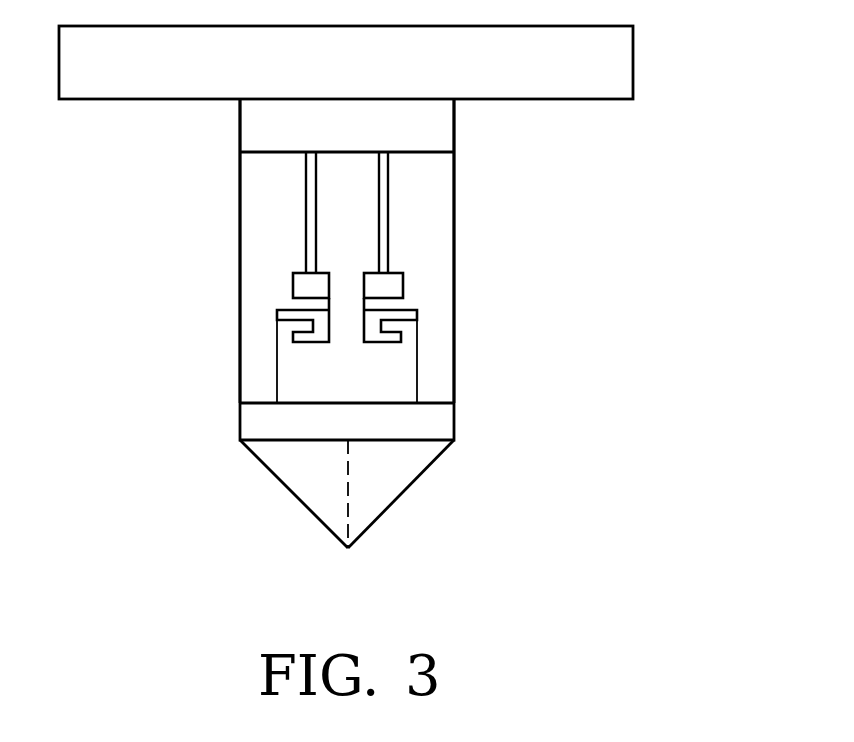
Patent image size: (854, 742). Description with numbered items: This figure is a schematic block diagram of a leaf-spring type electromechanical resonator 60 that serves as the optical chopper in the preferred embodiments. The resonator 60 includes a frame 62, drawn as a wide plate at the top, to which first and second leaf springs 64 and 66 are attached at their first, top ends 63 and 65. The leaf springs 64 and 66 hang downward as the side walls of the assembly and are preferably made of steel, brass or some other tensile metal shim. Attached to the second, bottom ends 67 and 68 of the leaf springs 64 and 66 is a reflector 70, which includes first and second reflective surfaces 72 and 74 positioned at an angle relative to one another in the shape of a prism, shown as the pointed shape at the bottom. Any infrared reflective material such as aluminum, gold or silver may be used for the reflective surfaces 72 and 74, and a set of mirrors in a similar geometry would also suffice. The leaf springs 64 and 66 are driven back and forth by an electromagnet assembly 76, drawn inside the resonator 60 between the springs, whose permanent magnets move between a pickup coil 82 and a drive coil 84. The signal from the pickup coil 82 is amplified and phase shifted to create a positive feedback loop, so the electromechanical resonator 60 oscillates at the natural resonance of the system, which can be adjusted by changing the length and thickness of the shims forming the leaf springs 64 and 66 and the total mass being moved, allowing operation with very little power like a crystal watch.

The electromechanical resonator 60 is at (643, 272).
The frame 62 is at (607, 62).
The first top end 63 is at (260, 163).
The first leaf spring 64 is at (258, 232).
The first top end 65 is at (427, 162).
The second leaf spring 66 is at (440, 238).
The second bottom end 67 is at (238, 382).
The second bottom end 68 is at (440, 392).
The reflector 70 is at (257, 425).
The first reflective surface 72 is at (305, 477).
The second reflective surface 74 is at (415, 457).
The electromagnet assembly 76 is at (278, 338).
The pickup coil 82 is at (385, 352).
The drive coil 84 is at (390, 285).